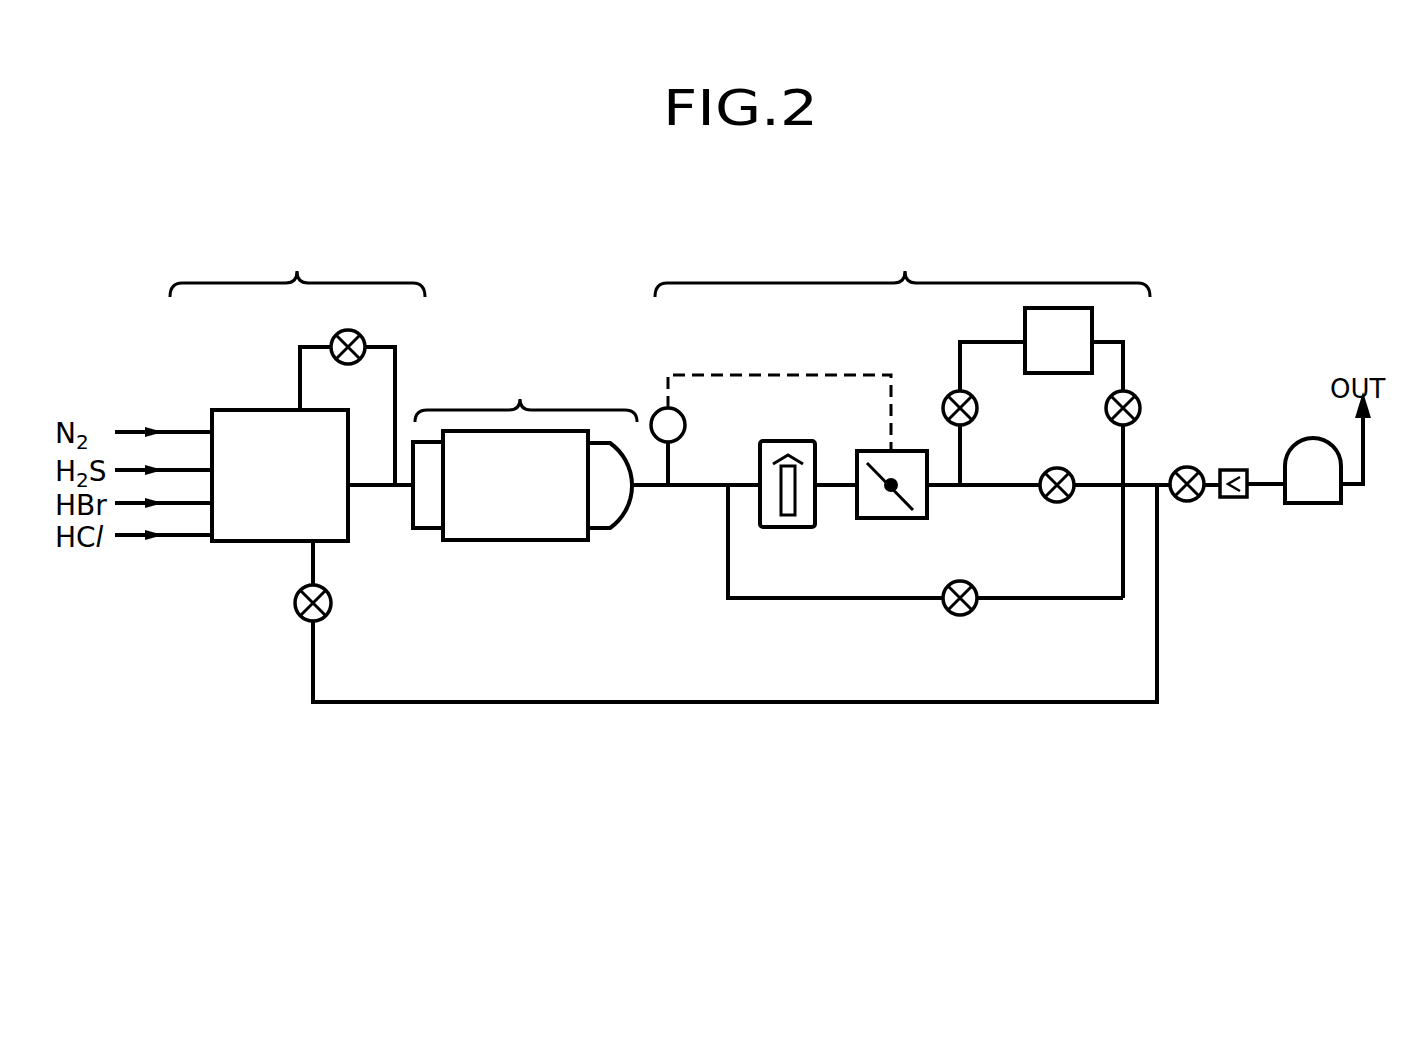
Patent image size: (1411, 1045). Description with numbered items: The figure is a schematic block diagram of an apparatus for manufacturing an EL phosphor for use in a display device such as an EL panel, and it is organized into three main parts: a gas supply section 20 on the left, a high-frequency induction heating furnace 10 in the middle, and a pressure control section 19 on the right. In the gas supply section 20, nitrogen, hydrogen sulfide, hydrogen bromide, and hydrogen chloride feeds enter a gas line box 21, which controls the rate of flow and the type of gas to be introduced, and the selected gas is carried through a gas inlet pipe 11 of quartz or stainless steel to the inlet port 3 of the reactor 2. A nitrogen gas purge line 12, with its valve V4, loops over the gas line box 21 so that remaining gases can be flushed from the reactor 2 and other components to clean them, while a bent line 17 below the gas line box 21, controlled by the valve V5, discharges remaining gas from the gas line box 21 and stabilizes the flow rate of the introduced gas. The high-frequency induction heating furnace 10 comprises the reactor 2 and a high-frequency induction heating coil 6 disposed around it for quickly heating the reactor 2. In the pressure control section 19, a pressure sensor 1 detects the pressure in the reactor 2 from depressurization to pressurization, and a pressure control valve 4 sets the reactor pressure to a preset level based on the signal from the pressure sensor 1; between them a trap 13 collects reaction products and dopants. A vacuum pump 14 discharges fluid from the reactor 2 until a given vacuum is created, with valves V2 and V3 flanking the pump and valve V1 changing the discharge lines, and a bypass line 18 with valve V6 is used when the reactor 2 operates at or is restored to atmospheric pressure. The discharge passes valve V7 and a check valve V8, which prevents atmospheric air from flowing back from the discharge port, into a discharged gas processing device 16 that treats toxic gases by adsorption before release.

The pressure sensor 1 is at (686, 432).
The reactor 2 is at (427, 530).
The inlet port 3 is at (412, 486).
The pressure control valve 4 is at (893, 518).
The high-frequency induction heating coil 6 is at (533, 541).
The high-frequency induction heating furnace 10 is at (526, 392).
The gas inlet pipe 11 is at (362, 483).
The nitrogen gas purge line 12 is at (396, 380).
The trap 13 is at (783, 441).
The vacuum pump 14 is at (1094, 324).
The discharged gas processing device 16 is at (1302, 438).
The bent line 17 is at (525, 704).
The bypass line 18 is at (766, 601).
The pressure control section 19 is at (902, 266).
The gas supply section 20 is at (297, 267).
The gas line box 21 is at (233, 410).
The valve V1 is at (1057, 503).
The valve V2 is at (978, 412).
The valve V3 is at (1138, 395).
The valve V4 is at (344, 334).
The valve V5 is at (330, 614).
The valve V6 is at (962, 616).
The valve V7 is at (1190, 501).
The check valve V8 is at (1232, 470).